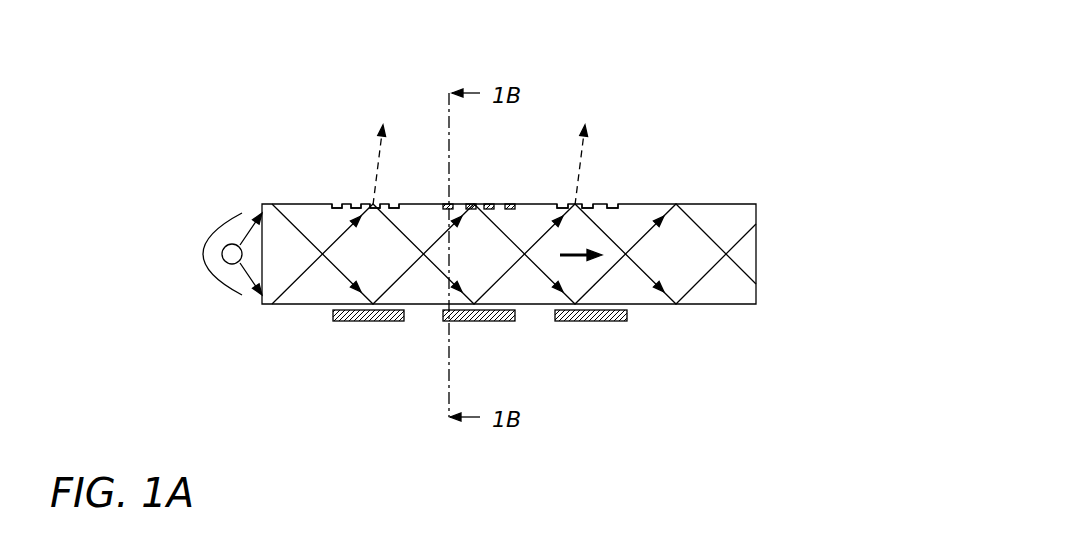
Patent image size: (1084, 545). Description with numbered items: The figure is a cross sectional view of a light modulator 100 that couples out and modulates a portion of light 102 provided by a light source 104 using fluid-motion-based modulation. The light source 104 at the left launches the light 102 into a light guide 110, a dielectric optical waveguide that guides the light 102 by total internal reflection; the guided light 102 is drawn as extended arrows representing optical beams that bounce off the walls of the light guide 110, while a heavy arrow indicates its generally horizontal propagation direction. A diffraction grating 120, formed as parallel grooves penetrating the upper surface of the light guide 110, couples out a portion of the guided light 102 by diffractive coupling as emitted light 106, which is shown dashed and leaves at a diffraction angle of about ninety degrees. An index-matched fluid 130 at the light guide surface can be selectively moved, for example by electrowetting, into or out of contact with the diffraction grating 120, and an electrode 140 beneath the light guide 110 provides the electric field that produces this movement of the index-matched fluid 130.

The light modulator 100 is at (738, 63).
The light 102 is at (325, 233).
The light source 104 is at (222, 193).
The emitted light 106 is at (597, 153).
The light guide 110 is at (756, 253).
The diffraction grating 120 is at (607, 195).
The index-matched fluid 130 is at (469, 206).
The electrode 140 is at (476, 322).